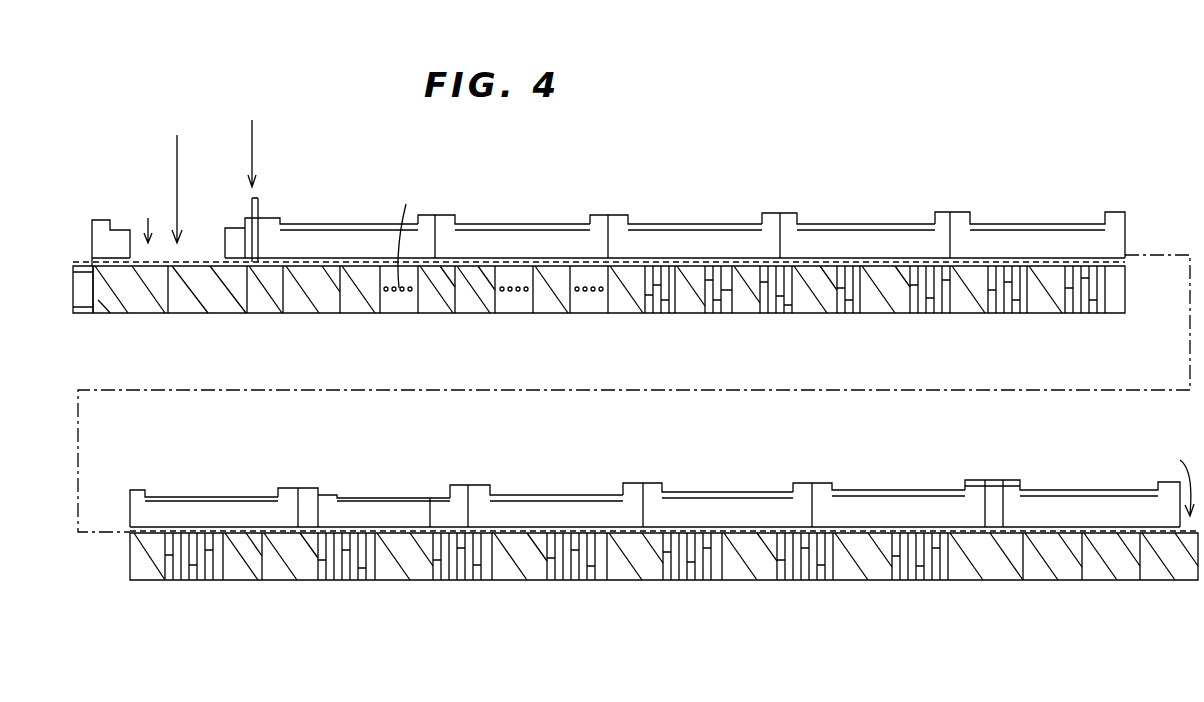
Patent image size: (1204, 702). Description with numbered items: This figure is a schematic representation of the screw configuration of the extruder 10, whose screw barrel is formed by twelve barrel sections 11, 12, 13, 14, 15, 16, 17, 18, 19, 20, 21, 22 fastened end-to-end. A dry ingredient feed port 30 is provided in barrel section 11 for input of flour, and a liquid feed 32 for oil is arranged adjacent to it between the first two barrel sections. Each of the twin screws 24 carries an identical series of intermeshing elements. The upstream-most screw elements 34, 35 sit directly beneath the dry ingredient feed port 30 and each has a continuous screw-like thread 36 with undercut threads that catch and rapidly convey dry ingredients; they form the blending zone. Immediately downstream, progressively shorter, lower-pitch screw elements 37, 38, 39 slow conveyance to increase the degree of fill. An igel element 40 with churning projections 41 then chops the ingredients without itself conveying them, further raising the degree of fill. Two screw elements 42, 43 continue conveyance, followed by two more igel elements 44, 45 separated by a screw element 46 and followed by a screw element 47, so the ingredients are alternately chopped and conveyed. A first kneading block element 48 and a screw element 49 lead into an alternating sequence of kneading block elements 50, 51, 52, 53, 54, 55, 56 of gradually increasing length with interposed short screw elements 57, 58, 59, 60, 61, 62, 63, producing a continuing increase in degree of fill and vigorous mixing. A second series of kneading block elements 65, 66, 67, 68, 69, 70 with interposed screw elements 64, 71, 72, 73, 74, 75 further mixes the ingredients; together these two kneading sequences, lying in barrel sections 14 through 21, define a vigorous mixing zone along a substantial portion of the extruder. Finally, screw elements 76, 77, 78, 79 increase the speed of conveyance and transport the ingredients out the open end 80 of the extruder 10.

The extruder 10 is at (248, 140).
The barrel section 11 is at (117, 216).
The barrel section 12 is at (372, 225).
The barrel section 13 is at (502, 225).
The barrel section 14 is at (686, 225).
The barrel section 15 is at (862, 225).
The barrel section 16 is at (1032, 225).
The barrel section 17 is at (213, 494).
The barrel section 18 is at (386, 492).
The barrel section 19 is at (571, 492).
The barrel section 20 is at (739, 490).
The barrel section 21 is at (910, 490).
The barrel section 22 is at (1087, 492).
The twin screw 24 is at (72, 320).
The dry ingredient feed port 30 is at (144, 218).
The liquid feed 32 is at (262, 206).
The screw element 34 is at (150, 315).
The screw element 35 is at (205, 315).
The screw-like thread 36 is at (118, 316).
The screw element 37 is at (258, 315).
The screw element 38 is at (300, 315).
The screw element 39 is at (352, 315).
The igel element 40 is at (392, 315).
The churning projections 41 is at (408, 232).
The screw element 42 is at (430, 315).
The screw element 43 is at (466, 315).
The igel element 44 is at (512, 315).
The igel element 45 is at (580, 315).
The screw element 46 is at (546, 315).
The screw element 47 is at (618, 315).
The kneading block element 48 is at (652, 315).
The screw element 49 is at (685, 315).
The kneading block element 50 is at (712, 315).
The kneading block element 51 is at (770, 315).
The kneading block element 52 is at (848, 315).
The kneading block element 53 is at (927, 315).
The kneading block element 54 is at (1008, 315).
The kneading block element 55 is at (1082, 315).
The kneading block element 56 is at (200, 583).
The screw element 57 is at (743, 315).
The screw element 58 is at (818, 315).
The screw element 59 is at (884, 315).
The screw element 60 is at (968, 315).
The screw element 61 is at (1045, 315).
The screw element 62 is at (148, 583).
The screw element 63 is at (244, 583).
The screw element 64 is at (296, 583).
The kneading block element 65 is at (346, 583).
The kneading block element 66 is at (460, 583).
The kneading block element 67 is at (576, 583).
The kneading block element 68 is at (686, 583).
The kneading block element 69 is at (802, 583).
The kneading block element 70 is at (916, 583).
The screw element 71 is at (406, 583).
The screw element 72 is at (524, 583).
The screw element 73 is at (622, 583).
The screw element 74 is at (748, 583).
The screw element 75 is at (860, 583).
The screw element 76 is at (984, 583).
The screw element 77 is at (1046, 583).
The screw element 78 is at (1106, 583).
The screw element 79 is at (1162, 583).
The open end 80 is at (1175, 477).